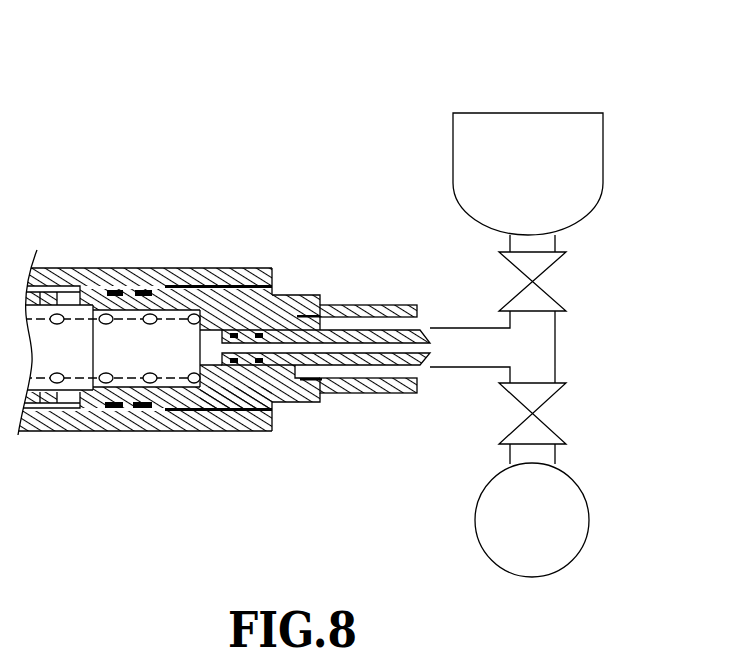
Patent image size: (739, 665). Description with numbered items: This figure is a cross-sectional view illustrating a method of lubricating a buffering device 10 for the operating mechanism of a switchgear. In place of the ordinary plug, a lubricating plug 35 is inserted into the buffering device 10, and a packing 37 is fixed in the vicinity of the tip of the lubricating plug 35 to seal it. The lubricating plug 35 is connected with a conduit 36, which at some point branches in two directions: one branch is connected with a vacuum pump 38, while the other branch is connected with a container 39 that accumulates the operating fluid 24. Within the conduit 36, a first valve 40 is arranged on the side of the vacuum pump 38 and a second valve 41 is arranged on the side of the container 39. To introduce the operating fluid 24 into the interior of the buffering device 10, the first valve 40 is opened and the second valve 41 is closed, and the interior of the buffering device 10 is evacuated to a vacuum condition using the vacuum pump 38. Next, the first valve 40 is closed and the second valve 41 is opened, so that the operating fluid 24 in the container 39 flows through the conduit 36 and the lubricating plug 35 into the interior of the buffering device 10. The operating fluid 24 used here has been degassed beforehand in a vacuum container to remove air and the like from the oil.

The buffering device 10 is at (102, 187).
The operating fluid 24 is at (127, 358).
The lubricating plug 35 is at (333, 335).
The conduit 36 is at (478, 328).
The packing 37 is at (262, 365).
The vacuum pump 38 is at (490, 528).
The container 39 is at (497, 128).
The first valve 40 is at (543, 395).
The second valve 41 is at (533, 270).